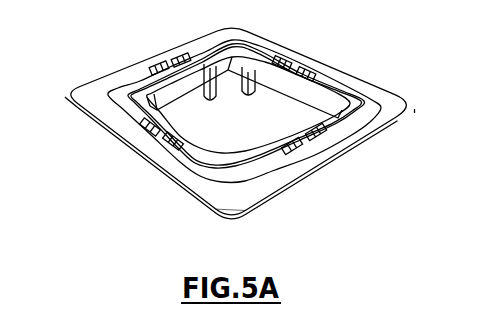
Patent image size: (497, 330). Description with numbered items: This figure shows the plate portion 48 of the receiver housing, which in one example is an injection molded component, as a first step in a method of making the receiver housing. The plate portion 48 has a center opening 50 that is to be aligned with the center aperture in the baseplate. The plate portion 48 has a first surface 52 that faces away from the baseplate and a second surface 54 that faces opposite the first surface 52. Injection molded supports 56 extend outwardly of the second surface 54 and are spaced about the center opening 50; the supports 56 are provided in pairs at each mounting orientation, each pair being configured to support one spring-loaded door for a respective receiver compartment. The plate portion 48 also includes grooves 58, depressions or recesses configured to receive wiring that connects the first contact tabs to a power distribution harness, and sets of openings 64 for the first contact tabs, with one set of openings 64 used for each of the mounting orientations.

The plate portion 48 is at (97, 108).
The center opening 50 is at (282, 103).
The first surface 52 is at (147, 82).
The second surface 54 is at (187, 190).
The supports 56 is at (247, 92).
The grooves 58 is at (120, 92).
The openings 64 is at (163, 58).